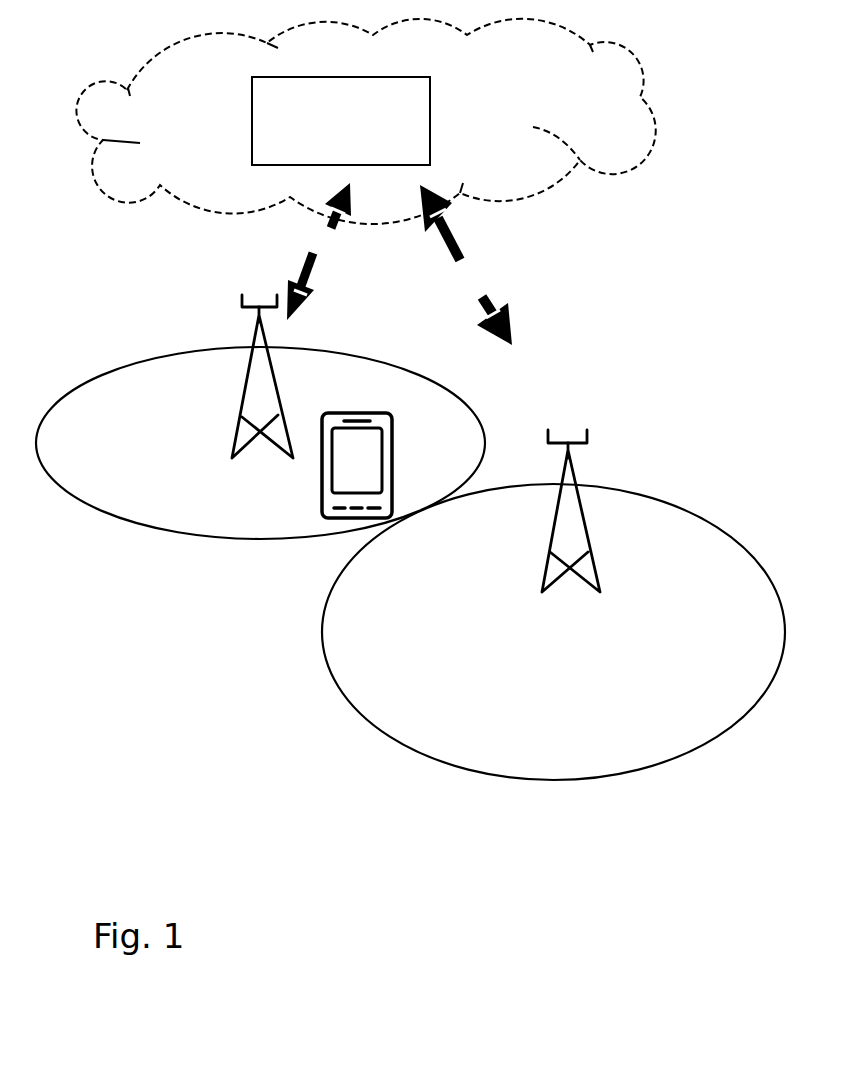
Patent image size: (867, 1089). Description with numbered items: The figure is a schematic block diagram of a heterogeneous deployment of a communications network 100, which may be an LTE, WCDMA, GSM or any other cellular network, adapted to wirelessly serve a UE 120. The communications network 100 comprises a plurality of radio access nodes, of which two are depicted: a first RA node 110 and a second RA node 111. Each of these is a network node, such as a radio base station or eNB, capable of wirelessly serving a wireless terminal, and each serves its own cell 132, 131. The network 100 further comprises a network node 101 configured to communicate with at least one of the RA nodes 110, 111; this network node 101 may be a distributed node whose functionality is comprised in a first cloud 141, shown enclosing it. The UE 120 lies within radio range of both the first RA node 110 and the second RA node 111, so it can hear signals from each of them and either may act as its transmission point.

The communications network 100 is at (496, 795).
The network node 101 is at (366, 134).
The first RA node 110 is at (258, 322).
The second RA node 111 is at (595, 565).
The UE 120 is at (322, 465).
The cell 131 is at (606, 650).
The cell 132 is at (166, 460).
The first cloud 141 is at (212, 134).